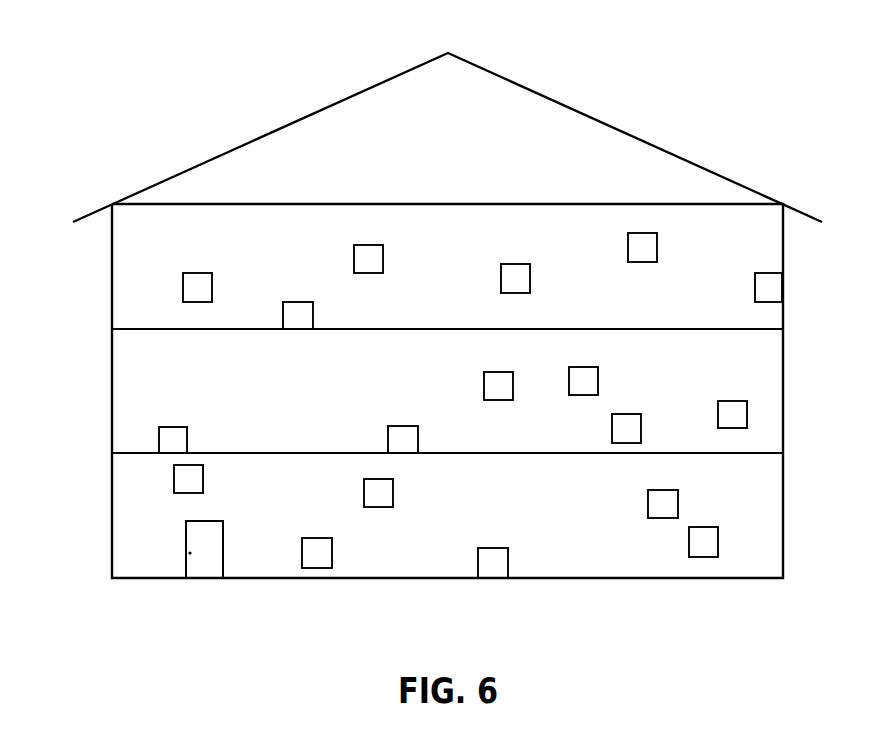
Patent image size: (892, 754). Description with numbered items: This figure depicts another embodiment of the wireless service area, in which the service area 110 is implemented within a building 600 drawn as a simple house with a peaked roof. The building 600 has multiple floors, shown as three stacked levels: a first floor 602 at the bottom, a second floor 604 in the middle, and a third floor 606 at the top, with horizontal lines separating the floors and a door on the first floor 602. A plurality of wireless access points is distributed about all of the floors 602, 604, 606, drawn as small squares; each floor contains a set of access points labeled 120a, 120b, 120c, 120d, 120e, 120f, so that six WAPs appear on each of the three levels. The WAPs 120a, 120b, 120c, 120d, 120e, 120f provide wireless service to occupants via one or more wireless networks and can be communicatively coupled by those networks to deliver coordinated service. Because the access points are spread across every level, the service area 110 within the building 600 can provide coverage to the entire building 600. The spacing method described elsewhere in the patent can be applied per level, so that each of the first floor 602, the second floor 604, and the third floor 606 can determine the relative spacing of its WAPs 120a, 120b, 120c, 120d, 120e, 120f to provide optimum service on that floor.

The building 600 is at (207, 58).
The wireless service area 110 is at (660, 162).
The third floor 606 is at (123, 303).
The second floor 604 is at (123, 403).
The first floor 602 is at (123, 508).
The wireless access point 120a is at (203, 284).
The wireless access point 120b is at (287, 309).
The wireless access point 120c is at (360, 254).
The wireless access point 120d is at (512, 272).
The wireless access point 120e is at (642, 250).
The wireless access point 120f is at (772, 286).